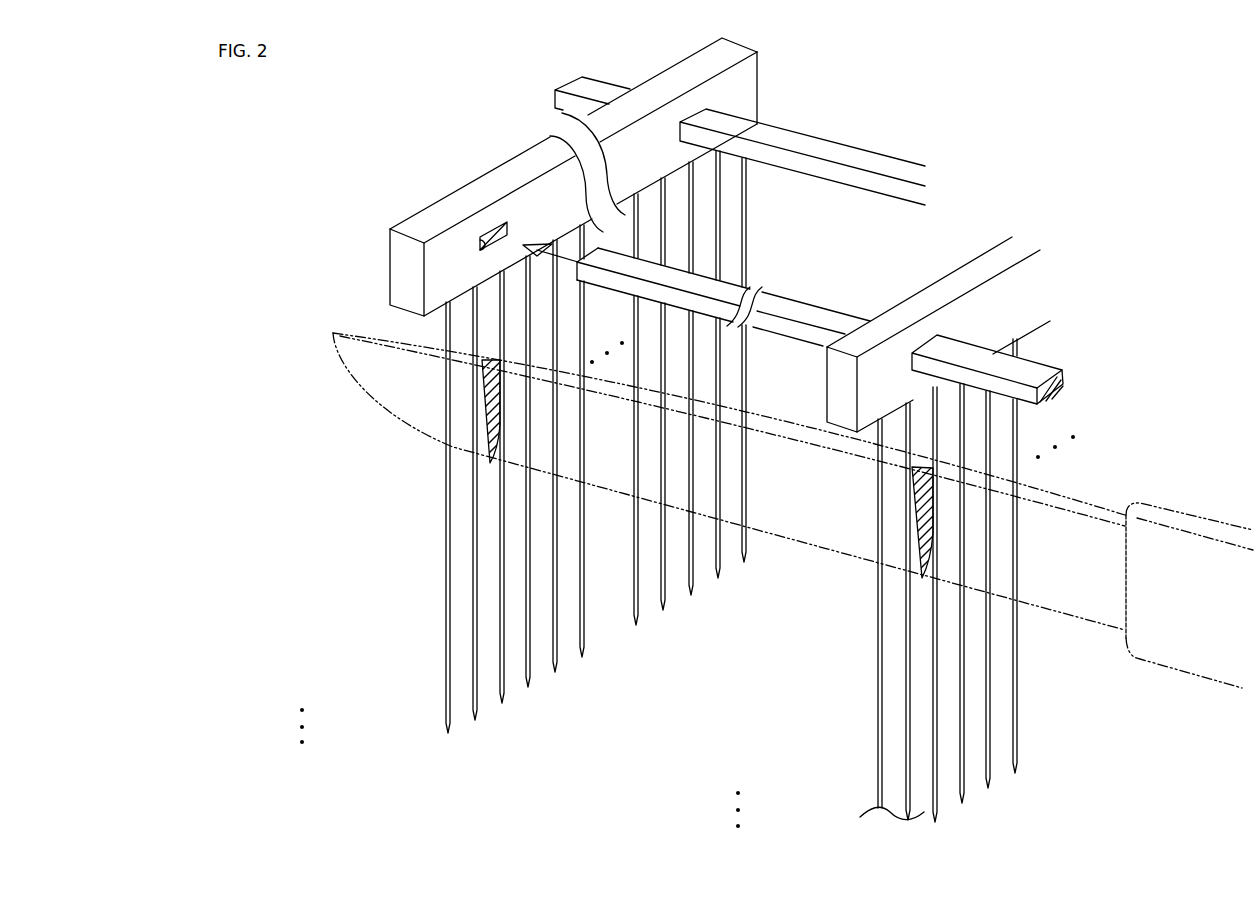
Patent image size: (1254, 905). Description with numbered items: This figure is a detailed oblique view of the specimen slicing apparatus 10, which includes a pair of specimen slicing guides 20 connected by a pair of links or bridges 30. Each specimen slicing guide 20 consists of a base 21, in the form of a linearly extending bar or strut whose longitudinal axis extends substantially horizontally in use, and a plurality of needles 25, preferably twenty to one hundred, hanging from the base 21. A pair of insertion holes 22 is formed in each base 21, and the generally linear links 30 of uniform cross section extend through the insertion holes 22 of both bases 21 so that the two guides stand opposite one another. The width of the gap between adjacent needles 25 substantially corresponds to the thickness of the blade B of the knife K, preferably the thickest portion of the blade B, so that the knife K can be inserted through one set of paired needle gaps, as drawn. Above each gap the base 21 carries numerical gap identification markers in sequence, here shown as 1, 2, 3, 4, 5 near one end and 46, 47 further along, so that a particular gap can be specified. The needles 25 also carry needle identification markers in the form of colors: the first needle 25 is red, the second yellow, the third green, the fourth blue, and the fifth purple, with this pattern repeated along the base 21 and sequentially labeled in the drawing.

The specimen slicing apparatus 10 is at (459, 134).
The specimen slicing guide 20 is at (400, 455).
The base 21 is at (423, 221).
The insertion hole 22 is at (424, 260).
The needle 25 is at (668, 247).
The link 30 is at (865, 149).
The gap identification marker 1 is at (674, 338).
The gap identification marker 2 is at (701, 322).
The gap identification marker 3 is at (543, 251).
The gap identification marker 4 is at (540, 232).
The gap identification marker 5 is at (783, 275).
The gap identification marker 46 is at (645, 173).
The gap identification marker 47 is at (673, 158).
The knife K is at (1106, 494).
The blade B is at (812, 520).